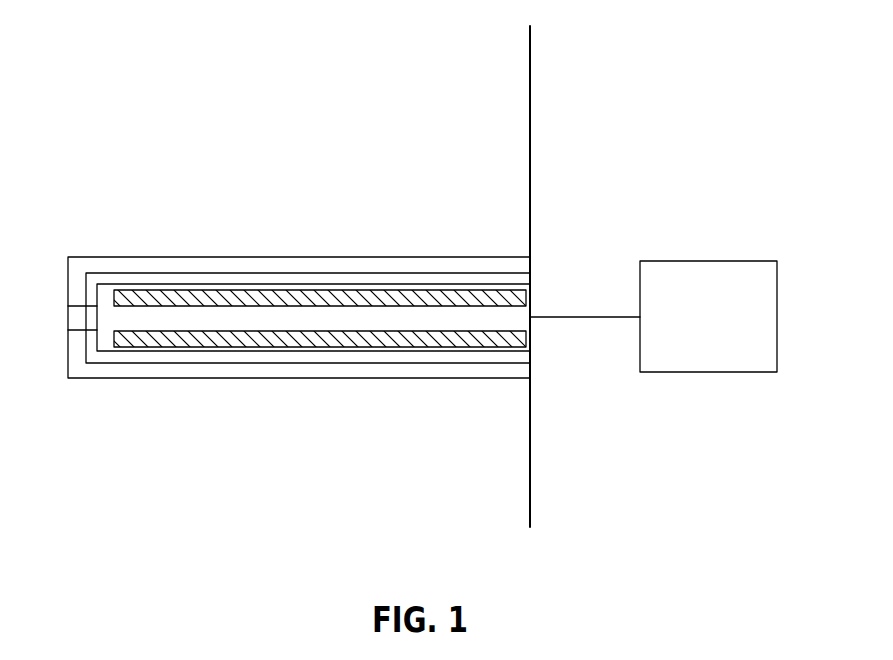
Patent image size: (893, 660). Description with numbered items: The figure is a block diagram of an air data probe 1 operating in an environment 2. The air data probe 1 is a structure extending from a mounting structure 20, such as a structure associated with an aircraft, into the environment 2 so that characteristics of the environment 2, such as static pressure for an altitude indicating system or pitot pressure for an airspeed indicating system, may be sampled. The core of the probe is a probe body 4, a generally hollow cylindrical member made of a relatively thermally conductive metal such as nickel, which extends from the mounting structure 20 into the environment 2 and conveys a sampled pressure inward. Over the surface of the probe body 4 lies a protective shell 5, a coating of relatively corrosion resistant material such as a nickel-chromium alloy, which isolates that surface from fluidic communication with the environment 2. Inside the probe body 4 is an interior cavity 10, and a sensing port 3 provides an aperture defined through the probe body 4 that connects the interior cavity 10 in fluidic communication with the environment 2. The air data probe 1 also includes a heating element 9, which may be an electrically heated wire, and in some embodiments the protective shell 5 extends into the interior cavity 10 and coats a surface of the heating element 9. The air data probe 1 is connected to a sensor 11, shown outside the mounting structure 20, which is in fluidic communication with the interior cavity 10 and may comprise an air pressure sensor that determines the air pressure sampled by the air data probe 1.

The air data probe 1 is at (528, 225).
The environment 2 is at (152, 152).
The sensing port 3 is at (72, 317).
The probe body 4 is at (283, 352).
The protective shell 5 is at (383, 370).
The heating element 9 is at (527, 338).
The interior cavity 10 is at (180, 318).
The sensor 11 is at (700, 373).
The mounting structure 20 is at (531, 110).